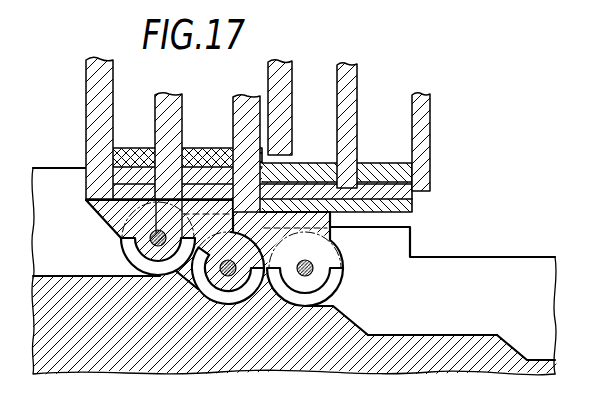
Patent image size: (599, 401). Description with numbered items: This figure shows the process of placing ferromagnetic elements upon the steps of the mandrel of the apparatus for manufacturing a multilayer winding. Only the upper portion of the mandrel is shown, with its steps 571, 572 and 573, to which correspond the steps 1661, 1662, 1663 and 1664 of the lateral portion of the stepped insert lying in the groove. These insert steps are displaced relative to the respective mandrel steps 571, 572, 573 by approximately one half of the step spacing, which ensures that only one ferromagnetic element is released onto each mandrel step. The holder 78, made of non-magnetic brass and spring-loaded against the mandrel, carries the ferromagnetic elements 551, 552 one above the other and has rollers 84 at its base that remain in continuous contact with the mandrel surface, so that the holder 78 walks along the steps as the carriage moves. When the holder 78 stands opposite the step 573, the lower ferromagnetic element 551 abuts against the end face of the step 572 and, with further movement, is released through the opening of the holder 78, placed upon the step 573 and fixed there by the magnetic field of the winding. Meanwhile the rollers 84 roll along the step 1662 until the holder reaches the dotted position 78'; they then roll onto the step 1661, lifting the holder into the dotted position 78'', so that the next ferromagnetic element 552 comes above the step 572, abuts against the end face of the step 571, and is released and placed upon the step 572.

The step of the mandrel 571 is at (43, 167).
The step of the mandrel 572 is at (104, 194).
The step of the mandrel 573 is at (386, 226).
The ferromagnetic element 551 is at (415, 202).
The ferromagnetic element 552 is at (383, 182).
The holder 78 is at (440, 138).
The holder position 78' is at (368, 118).
The holder position 78'' is at (303, 94).
The rollers 84 is at (341, 262).
The step of the insert portion 1661 is at (89, 259).
The step of the insert portion 1662 is at (340, 304).
The step of the insert portion 1663 is at (452, 336).
The step of the insert portion 1664 is at (528, 358).